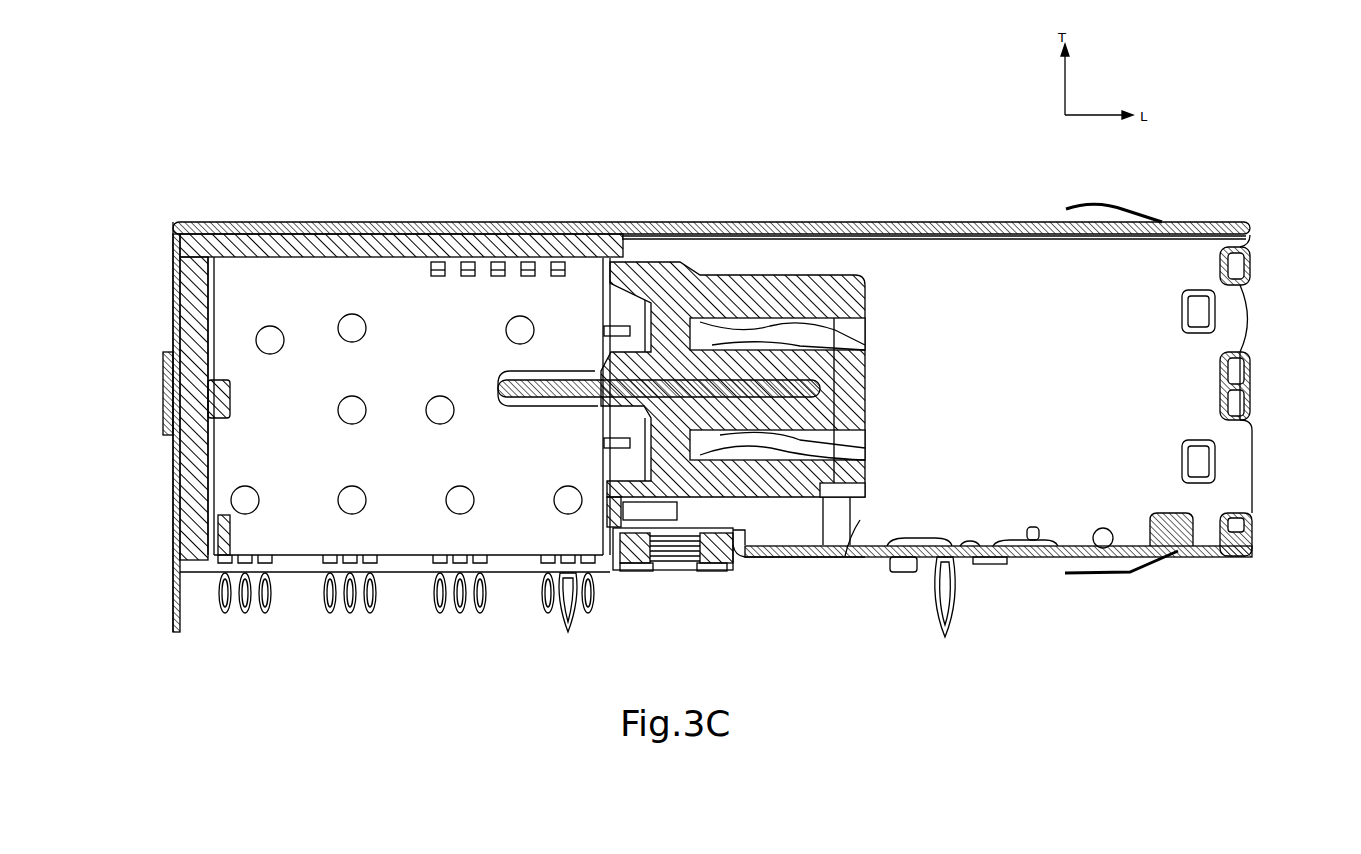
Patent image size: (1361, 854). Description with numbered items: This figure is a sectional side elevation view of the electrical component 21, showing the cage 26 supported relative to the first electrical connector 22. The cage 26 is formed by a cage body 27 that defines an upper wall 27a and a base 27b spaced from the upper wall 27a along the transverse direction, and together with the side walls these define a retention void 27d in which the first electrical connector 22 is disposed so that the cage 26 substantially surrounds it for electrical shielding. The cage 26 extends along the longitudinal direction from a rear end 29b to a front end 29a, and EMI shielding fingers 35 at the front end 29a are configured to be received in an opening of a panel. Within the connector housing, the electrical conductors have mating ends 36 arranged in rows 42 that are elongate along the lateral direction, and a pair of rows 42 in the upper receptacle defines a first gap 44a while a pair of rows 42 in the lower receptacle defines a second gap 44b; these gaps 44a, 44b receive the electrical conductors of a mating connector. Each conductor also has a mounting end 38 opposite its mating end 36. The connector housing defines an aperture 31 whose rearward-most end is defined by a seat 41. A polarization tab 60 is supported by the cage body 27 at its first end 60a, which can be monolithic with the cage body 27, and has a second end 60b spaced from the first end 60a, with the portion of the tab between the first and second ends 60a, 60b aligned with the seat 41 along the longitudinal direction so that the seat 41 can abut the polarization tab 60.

The electrical component 21 is at (288, 108).
The first electrical connector 22 is at (569, 355).
The cage 26 is at (953, 212).
The cage body 27 is at (400, 212).
The upper wall 27a is at (1012, 222).
The base 27b is at (1030, 560).
The retention void 27d is at (1265, 325).
The front end 29a is at (1253, 468).
The rear end 29b is at (170, 470).
The aperture 31 is at (876, 440).
The EMI shielding fingers 35 is at (1104, 205).
The mating end 36 is at (820, 322).
The mounting end 38 is at (437, 605).
The seat 41 is at (874, 500).
The rows 42 is at (708, 300).
The first gap 44a is at (850, 322).
The second gap 44b is at (850, 430).
The polarization tab 60 is at (791, 556).
The first end 60a is at (838, 540).
The second end 60b is at (868, 463).